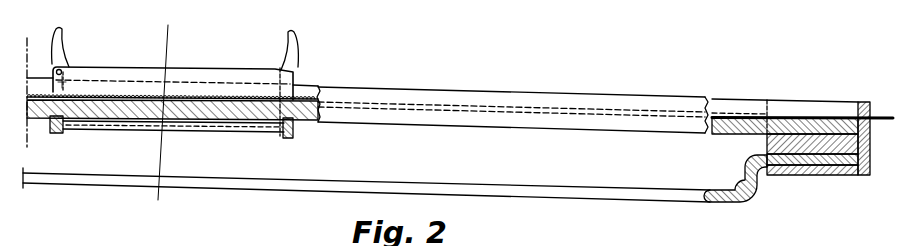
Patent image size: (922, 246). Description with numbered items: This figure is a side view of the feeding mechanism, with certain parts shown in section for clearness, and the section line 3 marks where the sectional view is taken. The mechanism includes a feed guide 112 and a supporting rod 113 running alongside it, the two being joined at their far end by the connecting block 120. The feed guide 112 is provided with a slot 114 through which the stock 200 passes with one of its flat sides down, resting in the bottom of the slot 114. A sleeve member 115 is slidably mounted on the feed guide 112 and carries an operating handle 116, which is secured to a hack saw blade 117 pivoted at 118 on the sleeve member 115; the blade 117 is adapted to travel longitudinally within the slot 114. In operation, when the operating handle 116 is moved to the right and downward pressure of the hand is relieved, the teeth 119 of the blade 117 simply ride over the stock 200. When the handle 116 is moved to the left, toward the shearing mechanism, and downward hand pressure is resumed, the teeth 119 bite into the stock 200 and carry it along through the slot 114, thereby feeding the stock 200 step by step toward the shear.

The section line 3- 3 is at (165, 113).
The feed guide 112 is at (541, 100).
The supporting rod 113 is at (583, 196).
The slot 114 is at (306, 92).
The sleeve member 115 is at (61, 128).
The operating handle 116 is at (133, 69).
The hack saw blade 117 is at (173, 80).
The pivot 118 is at (64, 67).
The teeth 119 is at (215, 96).
The connecting block 120 is at (766, 145).
The stock 200 is at (884, 114).